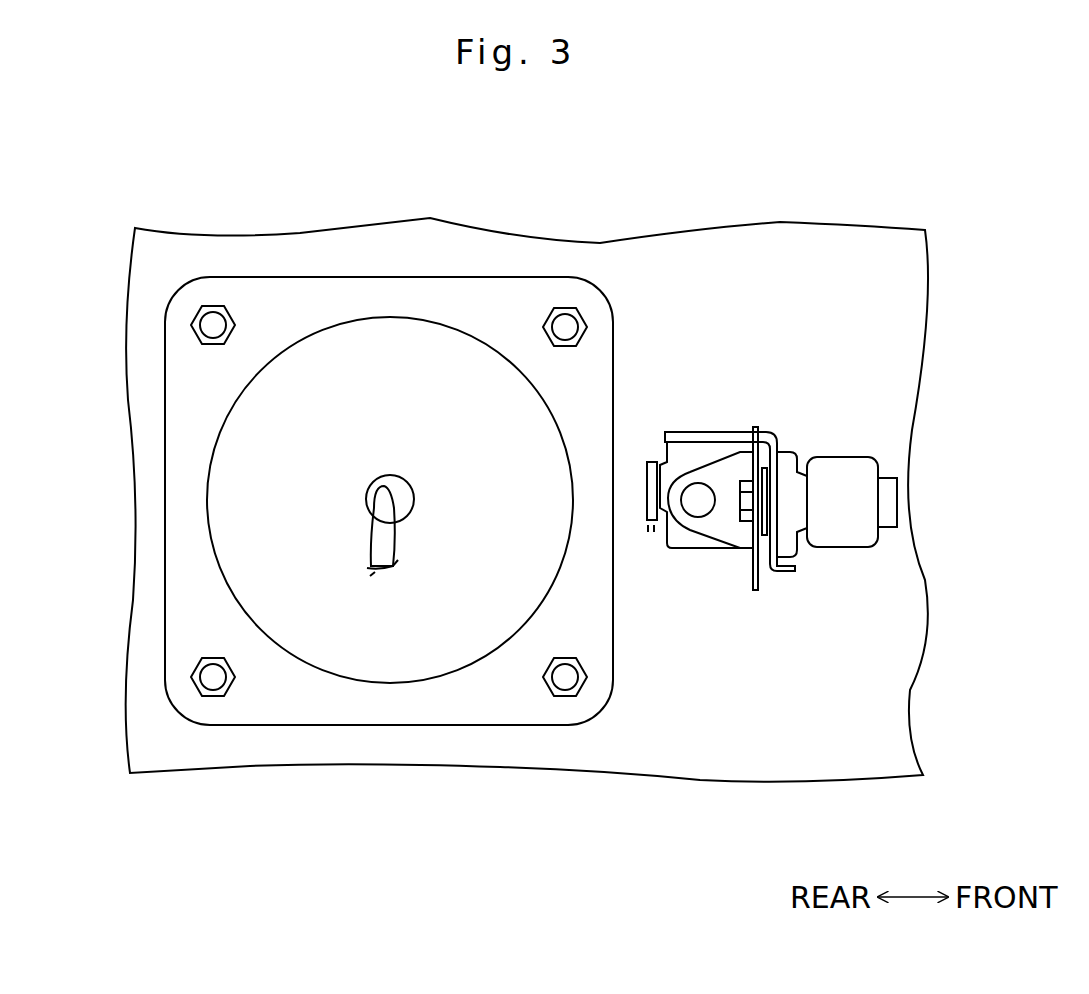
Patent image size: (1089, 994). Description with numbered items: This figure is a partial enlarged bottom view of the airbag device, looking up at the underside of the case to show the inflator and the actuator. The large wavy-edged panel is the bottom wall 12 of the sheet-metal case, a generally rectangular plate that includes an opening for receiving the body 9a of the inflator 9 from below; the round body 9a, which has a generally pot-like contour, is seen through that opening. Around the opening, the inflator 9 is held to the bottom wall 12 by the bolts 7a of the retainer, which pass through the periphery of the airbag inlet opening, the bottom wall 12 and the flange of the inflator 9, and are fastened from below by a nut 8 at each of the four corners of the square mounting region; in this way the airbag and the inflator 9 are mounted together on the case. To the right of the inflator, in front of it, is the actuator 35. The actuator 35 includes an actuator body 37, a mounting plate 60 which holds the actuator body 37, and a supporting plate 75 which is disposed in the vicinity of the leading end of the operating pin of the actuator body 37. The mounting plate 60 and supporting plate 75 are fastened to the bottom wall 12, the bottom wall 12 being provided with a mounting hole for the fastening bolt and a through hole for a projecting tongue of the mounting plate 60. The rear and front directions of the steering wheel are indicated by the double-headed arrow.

The inflator 9 is at (445, 266).
The body 9a is at (322, 353).
The bolts 7a is at (560, 315).
The nut 8 is at (576, 315).
The bottom wall 12 is at (813, 243).
The actuator 35 is at (850, 396).
The actuator body 37 is at (852, 558).
The mounting plate 60 is at (719, 416).
The supporting plate 75 is at (750, 570).